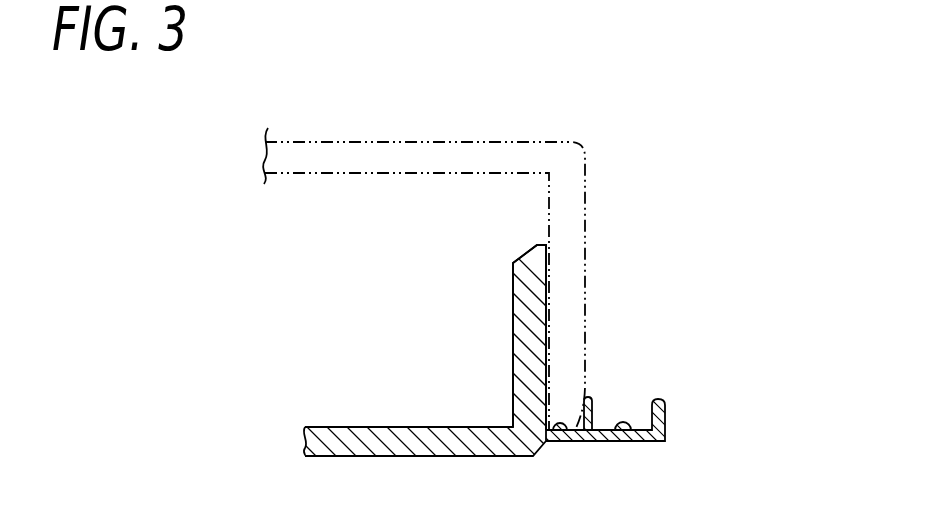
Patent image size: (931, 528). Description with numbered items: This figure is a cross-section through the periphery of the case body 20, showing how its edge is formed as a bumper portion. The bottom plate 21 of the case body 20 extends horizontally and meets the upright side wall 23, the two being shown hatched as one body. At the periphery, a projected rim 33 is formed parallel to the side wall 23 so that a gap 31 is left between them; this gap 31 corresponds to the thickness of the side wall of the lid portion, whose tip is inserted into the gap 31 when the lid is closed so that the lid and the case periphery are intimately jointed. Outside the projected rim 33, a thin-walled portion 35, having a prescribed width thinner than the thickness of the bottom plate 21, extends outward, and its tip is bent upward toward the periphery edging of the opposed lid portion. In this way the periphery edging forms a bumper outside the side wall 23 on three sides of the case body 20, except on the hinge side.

The case body 20 is at (678, 239).
The bottom plate 21 is at (398, 427).
The side wall 23 is at (514, 285).
The gap 31 is at (547, 443).
The projected rim 33 is at (592, 398).
The thin-walled portion 35 is at (637, 442).